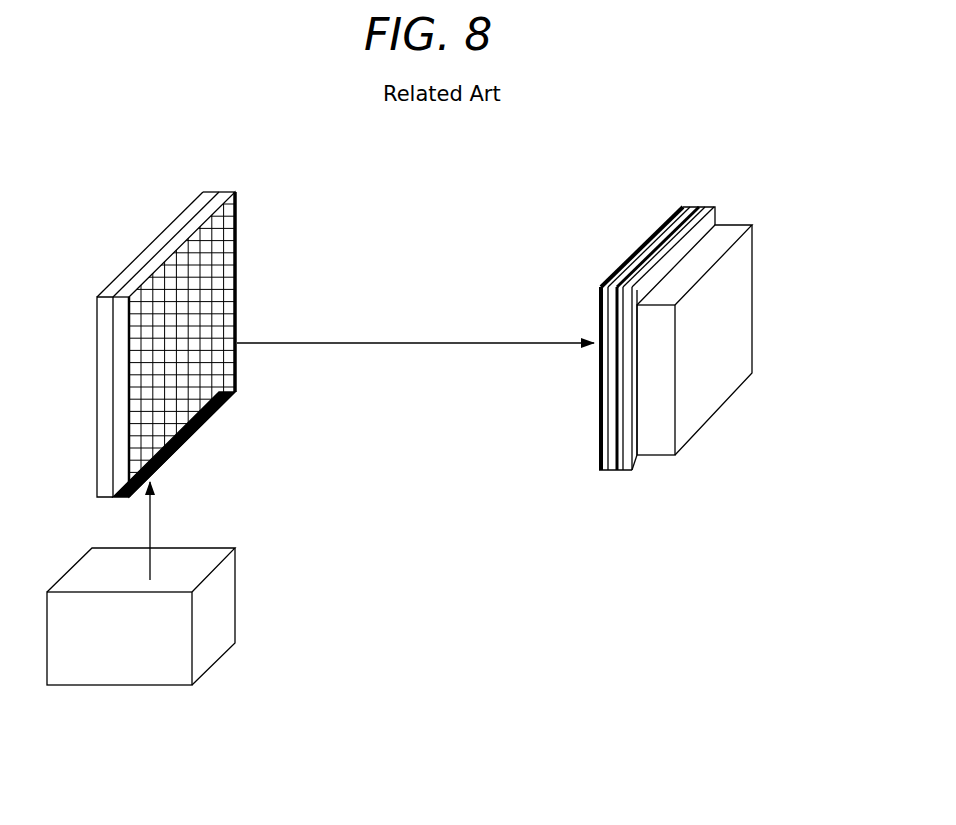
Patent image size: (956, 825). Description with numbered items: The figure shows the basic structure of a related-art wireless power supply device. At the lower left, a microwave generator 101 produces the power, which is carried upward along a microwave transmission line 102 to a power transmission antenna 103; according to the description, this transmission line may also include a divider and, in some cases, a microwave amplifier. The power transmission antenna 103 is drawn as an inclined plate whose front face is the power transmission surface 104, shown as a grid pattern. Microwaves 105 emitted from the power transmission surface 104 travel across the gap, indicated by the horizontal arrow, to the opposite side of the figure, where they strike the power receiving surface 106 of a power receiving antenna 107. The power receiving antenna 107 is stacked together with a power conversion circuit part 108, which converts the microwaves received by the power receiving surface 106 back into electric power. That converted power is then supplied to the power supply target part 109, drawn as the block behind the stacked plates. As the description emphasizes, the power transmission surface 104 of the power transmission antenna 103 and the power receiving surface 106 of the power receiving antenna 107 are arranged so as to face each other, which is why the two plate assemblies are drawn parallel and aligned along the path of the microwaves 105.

The microwave generator 101 is at (215, 608).
The microwave transmission line 102 is at (150, 517).
The power transmission antenna 103 is at (138, 250).
The power transmission surface 104 is at (142, 347).
The microwaves 105 is at (441, 343).
The power receiving surface 106 is at (597, 300).
The power receiving antenna 107 is at (692, 207).
The power conversion circuit part 108 is at (713, 210).
The power supply target part 109 is at (735, 319).